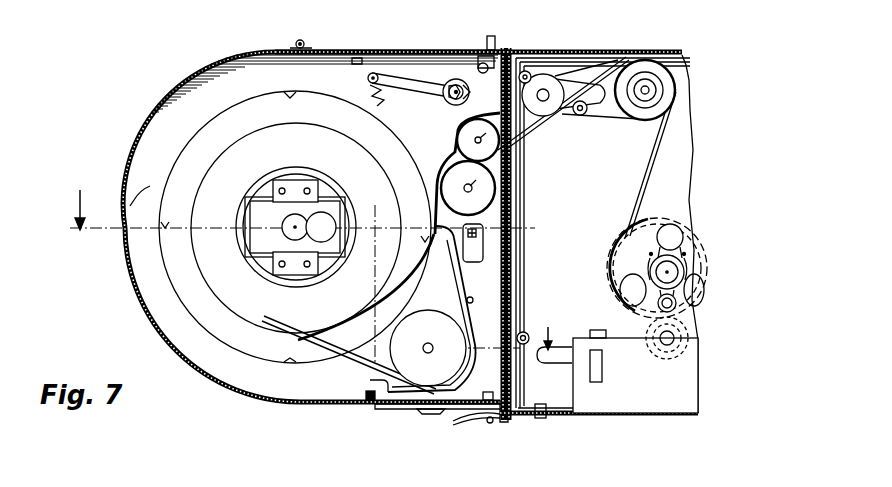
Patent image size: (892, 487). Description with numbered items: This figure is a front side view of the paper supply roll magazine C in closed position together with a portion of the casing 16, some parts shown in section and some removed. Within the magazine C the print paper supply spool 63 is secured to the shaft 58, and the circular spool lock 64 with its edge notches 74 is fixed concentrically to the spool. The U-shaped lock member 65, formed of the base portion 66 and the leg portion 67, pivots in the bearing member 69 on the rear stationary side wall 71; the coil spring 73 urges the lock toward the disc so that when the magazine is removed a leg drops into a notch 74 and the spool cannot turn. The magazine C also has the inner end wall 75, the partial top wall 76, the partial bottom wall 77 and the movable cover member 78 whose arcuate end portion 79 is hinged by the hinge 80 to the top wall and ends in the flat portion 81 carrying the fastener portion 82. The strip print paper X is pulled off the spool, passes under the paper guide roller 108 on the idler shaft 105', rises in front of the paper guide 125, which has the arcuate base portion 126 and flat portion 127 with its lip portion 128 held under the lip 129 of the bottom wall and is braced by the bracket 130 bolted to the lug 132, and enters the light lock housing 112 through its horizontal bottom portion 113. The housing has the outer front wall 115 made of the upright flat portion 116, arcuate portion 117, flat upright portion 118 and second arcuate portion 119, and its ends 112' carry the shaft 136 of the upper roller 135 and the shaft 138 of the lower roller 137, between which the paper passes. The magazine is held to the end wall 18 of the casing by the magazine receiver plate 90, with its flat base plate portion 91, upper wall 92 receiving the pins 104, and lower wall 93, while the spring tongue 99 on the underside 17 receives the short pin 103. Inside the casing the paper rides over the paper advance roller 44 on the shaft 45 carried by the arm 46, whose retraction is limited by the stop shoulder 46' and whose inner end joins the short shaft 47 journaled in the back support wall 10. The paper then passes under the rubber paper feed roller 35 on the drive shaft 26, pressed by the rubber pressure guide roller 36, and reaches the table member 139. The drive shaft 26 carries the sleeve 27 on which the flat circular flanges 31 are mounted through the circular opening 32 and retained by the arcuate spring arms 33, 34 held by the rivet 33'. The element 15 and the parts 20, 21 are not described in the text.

The back support wall 10 is at (318, 288).
The magazine C is at (120, 267).
The strip print paper X is at (208, 251).
The guide roller 15 is at (529, 334).
The casing 16 is at (696, 183).
The underside of the casing 17 is at (656, 420).
The end wall 18 is at (524, 238).
The side wall 20 is at (683, 163).
The top frame rail 21 is at (663, 50).
The drive shaft 26 is at (672, 272).
The sleeve or flange support 27 is at (684, 262).
The flat circular flange 31 is at (695, 219).
The circular opening 32 is at (683, 237).
The arcuate spring arm 33 is at (707, 283).
The rivet 33' is at (697, 301).
The arcuate spring arm 34 is at (658, 265).
The rubber paper feed roller 35 is at (667, 229).
The rubber pressure guide roller 36 is at (640, 345).
The paper advance roller 44 is at (670, 86).
The shaft 45 is at (657, 90).
The arm 46 is at (569, 89).
The stop shoulder 46' is at (650, 122).
The short shaft 47 is at (546, 101).
The shaft 58 is at (282, 231).
The print paper supply spool 63 is at (325, 192).
The circular spool lock 64 is at (196, 291).
The U-shaped lock member 65 is at (418, 75).
The base portion 66 is at (430, 100).
The leg portion 67 is at (452, 70).
The bearing member 69 is at (448, 99).
The rear stationary side wall 71 is at (464, 72).
The coil spring 73 is at (387, 98).
The notch 74 is at (292, 360).
The inner end wall 75 is at (517, 208).
The partial top wall 76 is at (396, 50).
The partial bottom wall 77 is at (476, 398).
The cover member 78 is at (130, 305).
The arcuate end portion 79 is at (146, 188).
The hinge 80 is at (303, 41).
The flat portion 81 is at (398, 411).
The fastener portion 82 is at (430, 416).
The magazine receiver plate 90 is at (516, 272).
The flat base plate portion 91 is at (520, 289).
The upper wall 92 is at (504, 52).
The lower wall 93 is at (508, 422).
The spring tongue 99 is at (468, 430).
The short pin 103 is at (495, 438).
The pin 104 is at (493, 38).
The idler shaft 105' is at (439, 356).
The paper guide roller 108 is at (452, 332).
The light lock housing 112 is at (438, 155).
The end of the housing 112' is at (535, 167).
The horizontal bottom portion 113 is at (477, 243).
The outer front wall 115 is at (432, 189).
The upright flat portion 116 is at (440, 205).
The arcuate portion 117 is at (445, 160).
The flat upright portion 118 is at (452, 143).
The second arcuate portion 119 is at (455, 128).
The paper guide 125 is at (490, 314).
The arcuate base portion 126 is at (487, 363).
The flat portion 127 is at (467, 298).
The lip portion 128 is at (374, 402).
The lip 129 is at (372, 390).
The bracket 130 is at (492, 256).
The lug 132 is at (525, 218).
The upper roller 135 is at (495, 146).
The shaft 136 is at (478, 140).
The lower roller 137 is at (479, 210).
The shaft 138 is at (468, 188).
The table member 139 is at (696, 381).